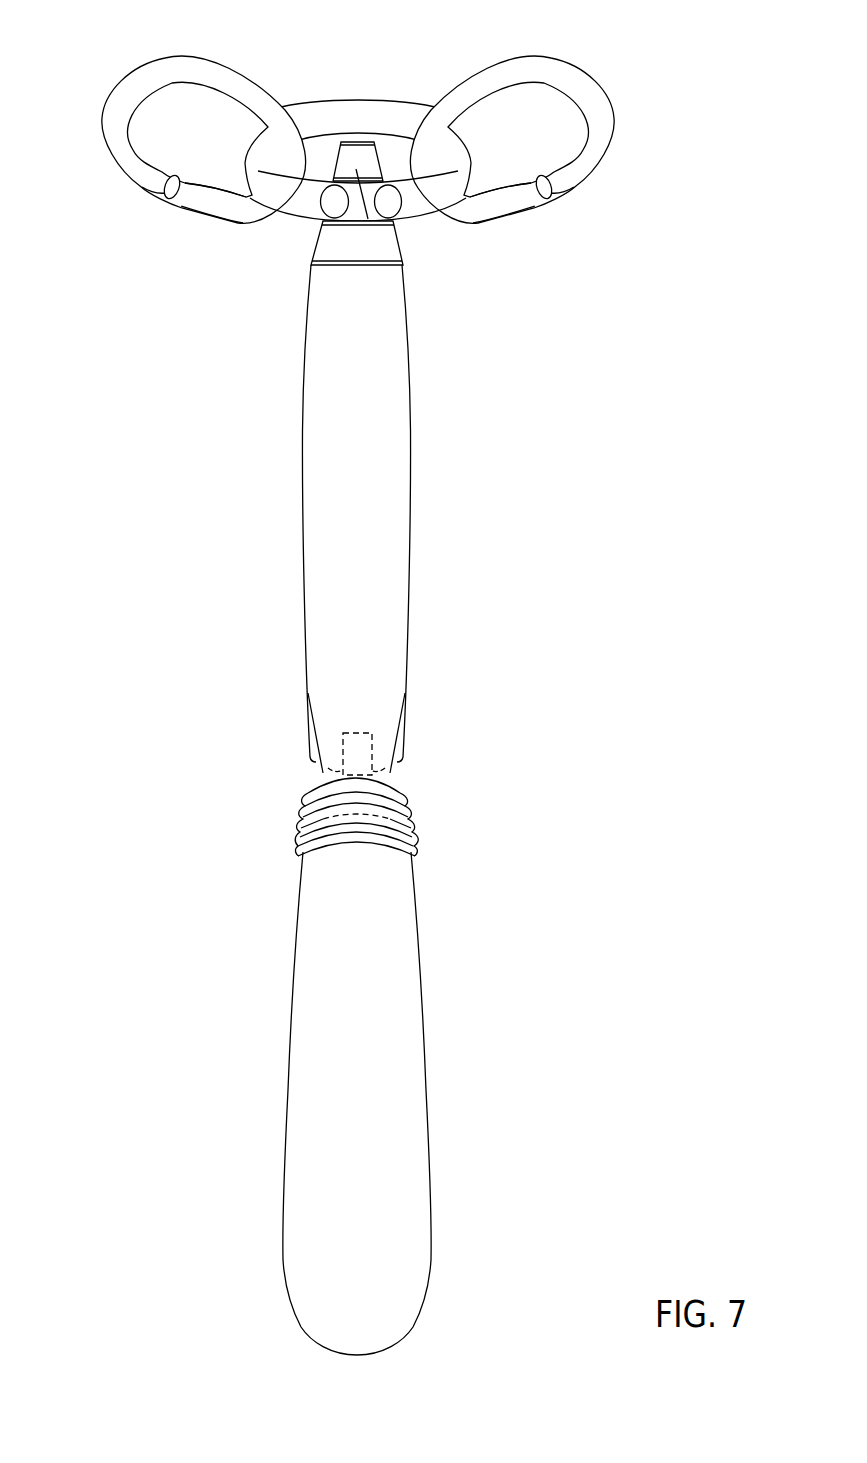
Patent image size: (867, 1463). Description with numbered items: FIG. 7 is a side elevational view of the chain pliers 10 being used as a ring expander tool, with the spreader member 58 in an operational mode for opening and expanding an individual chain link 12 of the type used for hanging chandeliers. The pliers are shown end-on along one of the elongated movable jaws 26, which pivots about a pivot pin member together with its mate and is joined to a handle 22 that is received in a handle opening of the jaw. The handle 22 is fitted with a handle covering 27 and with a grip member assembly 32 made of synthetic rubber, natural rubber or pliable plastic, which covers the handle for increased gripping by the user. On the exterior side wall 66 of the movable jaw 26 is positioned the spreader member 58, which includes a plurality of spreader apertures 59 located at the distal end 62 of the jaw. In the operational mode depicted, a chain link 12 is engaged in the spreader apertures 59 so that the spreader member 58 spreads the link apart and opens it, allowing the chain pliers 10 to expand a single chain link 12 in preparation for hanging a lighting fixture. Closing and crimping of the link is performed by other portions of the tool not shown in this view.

The chain pliers 10 is at (158, 287).
The chain link 12 is at (473, 98).
The handle 22 is at (355, 752).
The movable jaw 26 is at (358, 498).
The handle covering 27 is at (405, 814).
The grip member assembly 32 is at (397, 1173).
The spreader member 58 is at (340, 237).
The spreader apertures 59 is at (352, 208).
The distal end 62 is at (361, 140).
The exterior side wall 66 is at (356, 323).